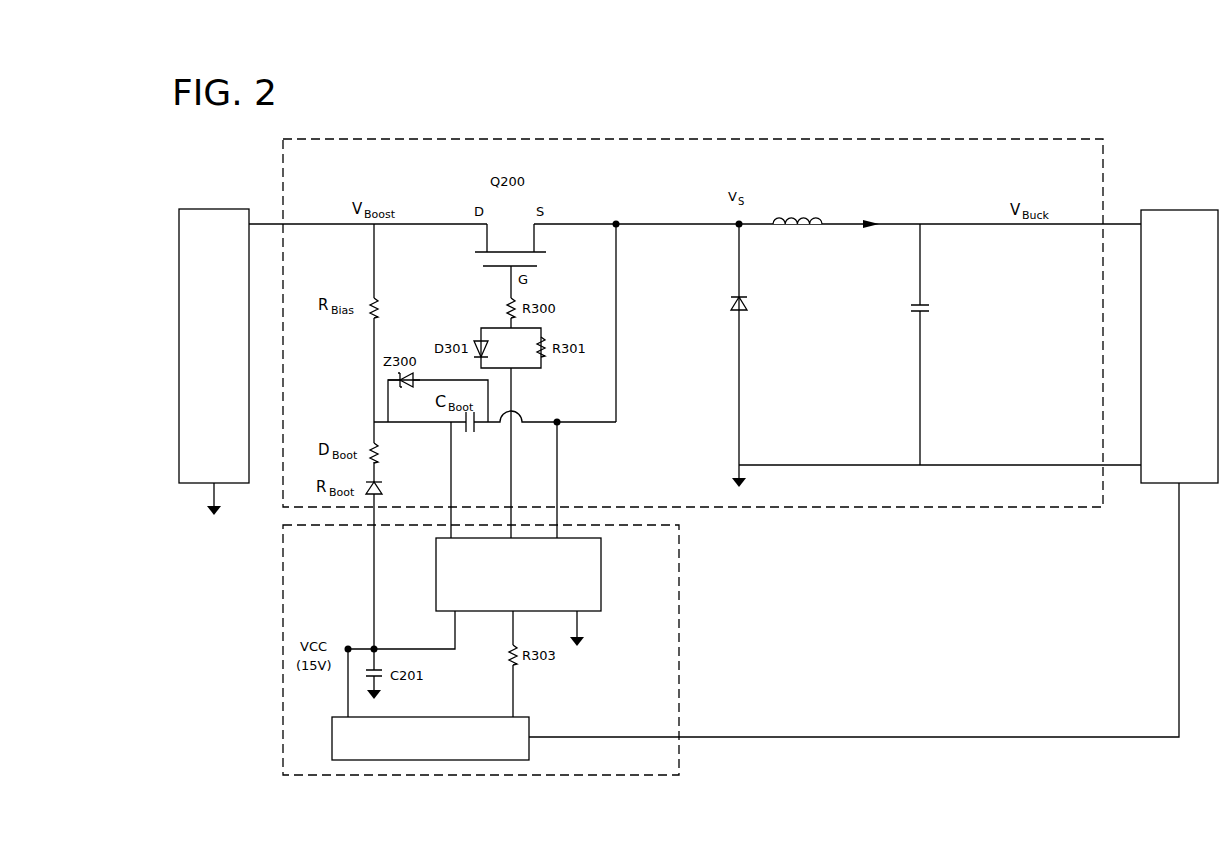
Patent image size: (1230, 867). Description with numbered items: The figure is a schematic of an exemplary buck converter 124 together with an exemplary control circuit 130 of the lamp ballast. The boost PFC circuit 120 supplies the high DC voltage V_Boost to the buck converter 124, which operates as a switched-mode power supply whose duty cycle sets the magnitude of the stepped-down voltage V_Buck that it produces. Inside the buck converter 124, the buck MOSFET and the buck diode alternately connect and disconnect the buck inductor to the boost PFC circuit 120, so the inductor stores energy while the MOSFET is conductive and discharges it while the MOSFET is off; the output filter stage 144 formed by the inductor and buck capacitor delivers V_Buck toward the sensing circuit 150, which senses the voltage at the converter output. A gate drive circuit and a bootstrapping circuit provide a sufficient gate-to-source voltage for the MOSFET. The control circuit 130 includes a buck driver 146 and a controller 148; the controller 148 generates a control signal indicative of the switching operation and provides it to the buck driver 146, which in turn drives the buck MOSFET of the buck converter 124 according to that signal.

The power factor correction circuit 120 is at (214, 209).
The buck converter 124 is at (585, 139).
The control circuit 130 is at (283, 690).
The buck output stage 144 is at (892, 180).
The buck driver 146 is at (601, 577).
The controller 148 is at (493, 717).
The sensing circuit 150 is at (1178, 210).